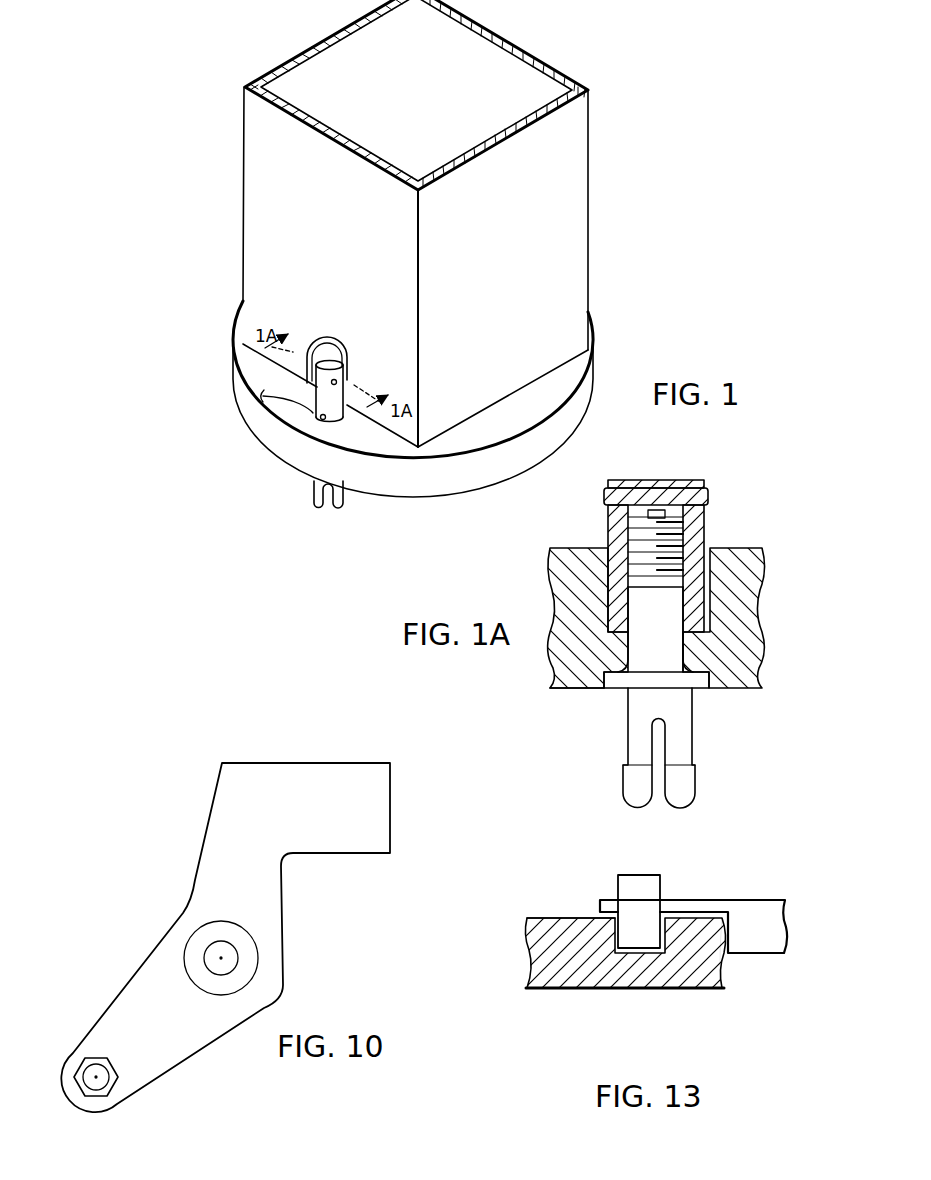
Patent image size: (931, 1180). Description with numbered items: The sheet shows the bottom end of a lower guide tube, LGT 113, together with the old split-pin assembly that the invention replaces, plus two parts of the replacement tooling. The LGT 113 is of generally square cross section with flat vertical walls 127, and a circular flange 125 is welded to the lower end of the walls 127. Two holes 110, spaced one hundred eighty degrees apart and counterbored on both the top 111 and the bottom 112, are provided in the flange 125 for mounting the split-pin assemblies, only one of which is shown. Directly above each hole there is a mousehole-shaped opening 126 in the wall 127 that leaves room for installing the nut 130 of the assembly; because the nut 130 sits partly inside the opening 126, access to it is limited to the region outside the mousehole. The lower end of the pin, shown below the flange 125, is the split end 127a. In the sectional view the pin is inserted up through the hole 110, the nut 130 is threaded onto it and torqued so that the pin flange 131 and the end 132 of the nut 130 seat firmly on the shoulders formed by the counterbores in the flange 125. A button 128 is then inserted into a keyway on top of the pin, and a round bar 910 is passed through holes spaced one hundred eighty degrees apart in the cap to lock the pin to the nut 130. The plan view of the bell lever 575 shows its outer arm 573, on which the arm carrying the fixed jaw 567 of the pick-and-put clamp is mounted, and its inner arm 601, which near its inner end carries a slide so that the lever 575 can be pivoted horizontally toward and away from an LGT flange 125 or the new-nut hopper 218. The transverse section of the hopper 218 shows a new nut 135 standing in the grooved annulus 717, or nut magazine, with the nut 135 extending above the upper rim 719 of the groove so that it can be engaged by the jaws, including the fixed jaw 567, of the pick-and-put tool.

In FIG. 1, the LGT 113 is at (597, 173).
In FIG. 1, the flat vertical walls 127 is at (260, 129).
In FIG. 1, the circular flange 125 is at (532, 448).
In FIG. 1A, the circular flange 125 is at (764, 590).
In FIG. 1, the opening (mousehole) 126 is at (328, 346).
In FIG. 1, the nut 130 is at (316, 386).
In FIG. 1A, the nut 130 is at (702, 543).
In FIG. 1, the round bar 910 is at (339, 381).
In FIG. 1A, the round bar 910 is at (712, 488).
In FIG. 1, the through holes 110 is at (321, 421).
In FIG. 1A, the through holes 110 is at (627, 656).
In FIG. 1, the pin flange 131 is at (264, 396).
In FIG. 1A, the pin flange 131 is at (697, 684).
In FIG. 1, the button 128 is at (257, 449).
In FIG. 1A, the button 128 is at (664, 515).
In FIG. 1, the prong 127a is at (345, 502).
In FIG. 1A, the prong 127a is at (615, 702).
In FIG. 1A, the top 111 is at (552, 545).
In FIG. 1A, the end of the nut 132 is at (750, 648).
In FIG. 1A, the bottom 112 is at (563, 692).
In FIG. 10, the outer arm 573 is at (285, 780).
In FIG. 10, the inner arm 601 is at (150, 977).
In FIG. 10, the bell lever 575 is at (267, 1091).
In FIG. 13, the new-nut hopper 218 is at (611, 997).
In FIG. 13, the upper rim 719 is at (573, 917).
In FIG. 13, the grooved annulus (nut magazine) 717 is at (732, 977).
In FIG. 13, the new nut 135 is at (628, 888).
In FIG. 13, the fixed jaw 567 is at (667, 902).